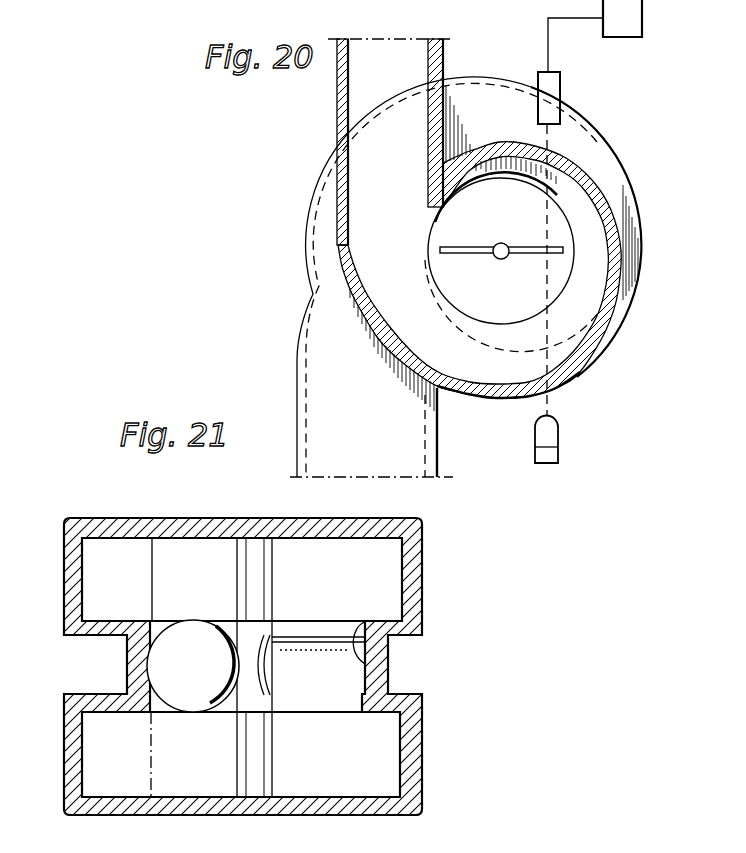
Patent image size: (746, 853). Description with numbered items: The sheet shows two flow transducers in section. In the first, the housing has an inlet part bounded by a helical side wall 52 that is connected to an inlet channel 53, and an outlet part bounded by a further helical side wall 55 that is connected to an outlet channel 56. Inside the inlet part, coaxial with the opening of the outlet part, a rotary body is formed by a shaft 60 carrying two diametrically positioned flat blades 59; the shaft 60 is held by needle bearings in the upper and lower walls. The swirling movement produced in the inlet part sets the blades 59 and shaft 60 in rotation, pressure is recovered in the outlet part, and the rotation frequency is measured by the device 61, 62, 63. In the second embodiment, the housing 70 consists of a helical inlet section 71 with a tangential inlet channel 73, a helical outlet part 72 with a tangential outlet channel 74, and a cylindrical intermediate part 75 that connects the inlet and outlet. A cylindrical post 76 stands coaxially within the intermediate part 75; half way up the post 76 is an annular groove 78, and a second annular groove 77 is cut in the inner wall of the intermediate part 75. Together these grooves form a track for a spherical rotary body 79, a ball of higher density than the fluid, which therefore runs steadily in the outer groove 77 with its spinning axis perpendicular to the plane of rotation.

In FIG. 20, the helical side wall 52 is at (580, 362).
In FIG. 20, the inlet channel 53 is at (365, 88).
In FIG. 20, the helical side wall 55 is at (605, 143).
In FIG. 20, the outlet channel 56 is at (398, 438).
In FIG. 20, the flat blades 59 is at (553, 247).
In FIG. 20, the shaft 60 is at (506, 256).
In FIG. 20, the rotation frequency measuring device 61 is at (548, 435).
In FIG. 20, the rotation frequency measuring device 62 is at (548, 97).
In FIG. 20, the rotation frequency measuring device 63 is at (622, 30).
In FIG. 21, the housing 70 is at (130, 510).
In FIG. 21, the helical inlet section 71 is at (417, 578).
In FIG. 21, the helical outlet part 72 is at (410, 770).
In FIG. 21, the tangential inlet channel 73 is at (98, 578).
In FIG. 21, the tangential outlet channel 74 is at (100, 754).
In FIG. 21, the cylindrical intermediate part 75 is at (377, 657).
In FIG. 21, the cylindrical post 76 is at (245, 557).
In FIG. 21, the annular groove 77 is at (366, 621).
In FIG. 21, the annular groove 78 is at (265, 672).
In FIG. 21, the spherical rotary body 79 is at (170, 665).